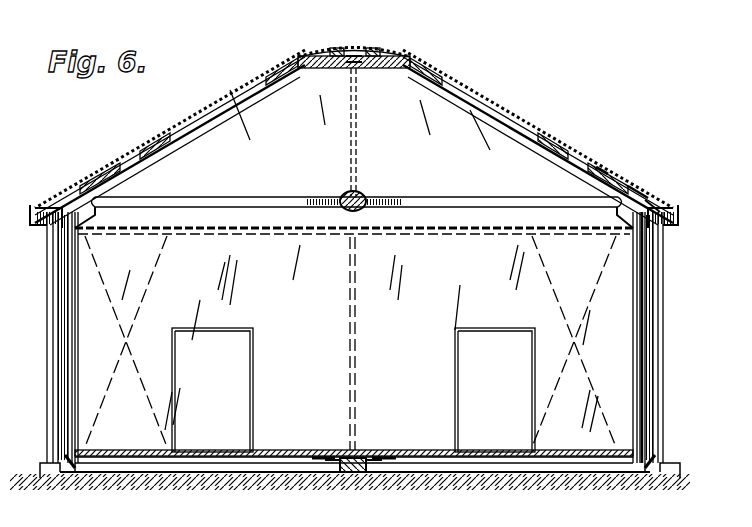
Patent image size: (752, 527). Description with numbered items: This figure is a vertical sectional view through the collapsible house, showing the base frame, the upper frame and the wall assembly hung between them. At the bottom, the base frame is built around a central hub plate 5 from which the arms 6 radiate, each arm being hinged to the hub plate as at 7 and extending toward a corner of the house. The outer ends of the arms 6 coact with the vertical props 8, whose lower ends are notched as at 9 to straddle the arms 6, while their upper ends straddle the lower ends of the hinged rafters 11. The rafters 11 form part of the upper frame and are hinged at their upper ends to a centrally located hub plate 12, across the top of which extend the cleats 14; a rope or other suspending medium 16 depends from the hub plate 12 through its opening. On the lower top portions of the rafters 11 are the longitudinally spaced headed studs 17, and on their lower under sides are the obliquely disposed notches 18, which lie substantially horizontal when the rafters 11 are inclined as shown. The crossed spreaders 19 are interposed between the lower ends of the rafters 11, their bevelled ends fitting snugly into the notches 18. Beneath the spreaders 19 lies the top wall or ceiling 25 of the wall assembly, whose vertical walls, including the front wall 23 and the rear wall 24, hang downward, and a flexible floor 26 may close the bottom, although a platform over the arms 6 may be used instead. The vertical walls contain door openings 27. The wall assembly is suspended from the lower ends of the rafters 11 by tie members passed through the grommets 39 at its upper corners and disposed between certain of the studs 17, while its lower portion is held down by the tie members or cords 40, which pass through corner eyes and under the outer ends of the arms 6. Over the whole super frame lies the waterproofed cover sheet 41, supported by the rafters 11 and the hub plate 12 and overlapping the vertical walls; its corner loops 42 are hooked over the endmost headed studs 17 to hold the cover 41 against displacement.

The hub plate 5 is at (337, 470).
The arms 6 is at (203, 465).
The hinge 7 is at (640, 182).
The vertical props 8 is at (48, 350).
The notch 9 is at (57, 458).
The rafters 11 is at (190, 140).
The hub plate 12 is at (368, 70).
The cleats 14 is at (370, 50).
The rope 16 is at (357, 130).
The headed studs 17 is at (676, 208).
The notches 18 is at (607, 167).
The crossed spreaders 19 is at (240, 196).
The front wall 23 is at (636, 272).
The rear wall 24 is at (73, 286).
The top wall 25 is at (263, 228).
The flexible floor 26 is at (273, 451).
The door openings 27 is at (254, 364).
The grommets 39 is at (618, 232).
The tie members 40 is at (70, 476).
The cover sheet 41 is at (455, 79).
The loops 42 is at (657, 192).